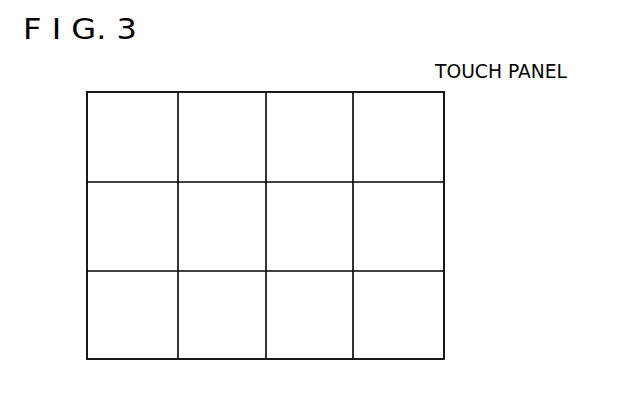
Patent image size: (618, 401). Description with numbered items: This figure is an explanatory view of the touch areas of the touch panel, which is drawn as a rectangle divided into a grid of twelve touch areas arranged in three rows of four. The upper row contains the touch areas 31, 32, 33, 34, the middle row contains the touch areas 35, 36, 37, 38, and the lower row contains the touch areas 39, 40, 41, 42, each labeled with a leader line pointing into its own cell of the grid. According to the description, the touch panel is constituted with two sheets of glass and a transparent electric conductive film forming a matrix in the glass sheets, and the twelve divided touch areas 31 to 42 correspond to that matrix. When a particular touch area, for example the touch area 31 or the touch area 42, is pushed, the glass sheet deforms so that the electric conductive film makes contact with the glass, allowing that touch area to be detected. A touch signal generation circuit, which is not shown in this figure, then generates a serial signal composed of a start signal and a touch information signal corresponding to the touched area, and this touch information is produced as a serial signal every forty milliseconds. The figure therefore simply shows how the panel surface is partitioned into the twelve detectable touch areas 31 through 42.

The touch area 31 is at (129, 100).
The touch area 32 is at (227, 103).
The touch area 33 is at (318, 100).
The touch area 34 is at (400, 97).
The touch area 35 is at (100, 208).
The touch area 36 is at (186, 235).
The touch area 37 is at (332, 205).
The touch area 38 is at (420, 240).
The touch area 39 is at (113, 313).
The touch area 40 is at (245, 345).
The touch area 41 is at (317, 352).
The touch area 42 is at (407, 353).